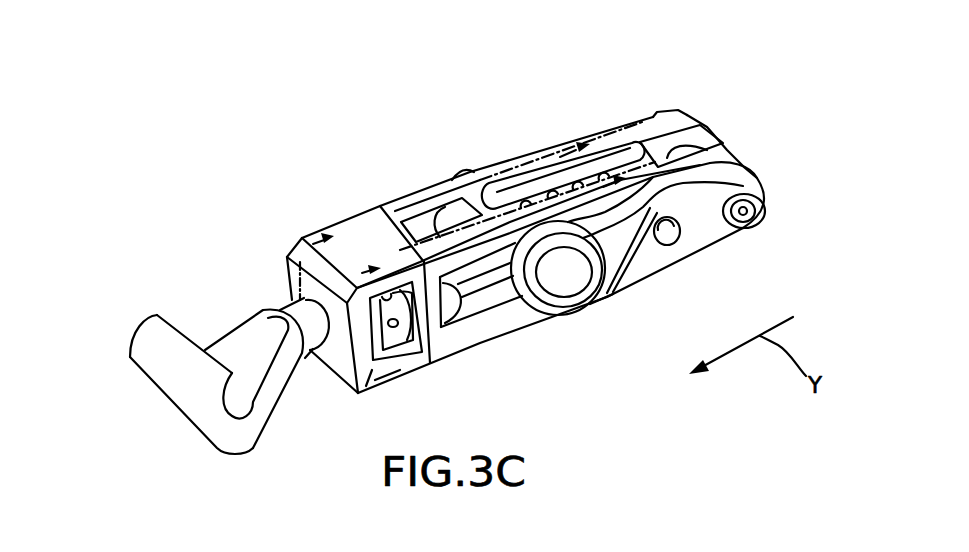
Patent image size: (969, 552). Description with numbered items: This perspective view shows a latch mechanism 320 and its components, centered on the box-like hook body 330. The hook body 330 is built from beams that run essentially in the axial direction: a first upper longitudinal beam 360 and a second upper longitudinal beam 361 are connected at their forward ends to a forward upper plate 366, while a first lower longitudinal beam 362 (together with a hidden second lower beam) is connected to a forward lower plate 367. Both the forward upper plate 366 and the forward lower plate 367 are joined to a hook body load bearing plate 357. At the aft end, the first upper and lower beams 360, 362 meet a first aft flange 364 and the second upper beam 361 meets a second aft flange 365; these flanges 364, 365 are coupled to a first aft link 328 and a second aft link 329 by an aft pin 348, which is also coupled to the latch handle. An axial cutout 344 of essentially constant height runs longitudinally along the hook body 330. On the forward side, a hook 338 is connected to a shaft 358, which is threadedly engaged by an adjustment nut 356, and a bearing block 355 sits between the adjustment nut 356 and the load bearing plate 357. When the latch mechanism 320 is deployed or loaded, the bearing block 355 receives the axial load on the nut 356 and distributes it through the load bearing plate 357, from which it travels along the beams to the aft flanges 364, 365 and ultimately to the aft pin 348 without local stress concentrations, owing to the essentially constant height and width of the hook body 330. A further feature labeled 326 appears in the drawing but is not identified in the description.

The latch mechanism 320 is at (204, 80).
The lower edge of bracket 326 is at (600, 297).
The first aft link 328 is at (703, 230).
The second aft link 329 is at (677, 103).
The hook body 330 is at (483, 341).
The hook 338 is at (147, 357).
The axial cutout 344 is at (560, 344).
The aft pin 348 is at (746, 212).
The bearing block 355 is at (372, 372).
The adjustment nut 356 is at (440, 347).
The hook body load bearing plate 357 is at (355, 348).
The shaft 358 is at (300, 312).
The first upper longitudinal beam 360 is at (590, 207).
The second upper longitudinal beam 361 is at (508, 177).
The first lower longitudinal beam 362 is at (443, 343).
The first aft flange 364 is at (727, 155).
The second aft flange 365 is at (693, 125).
The forward upper plate 366 is at (357, 244).
The forward lower plate 367 is at (383, 378).